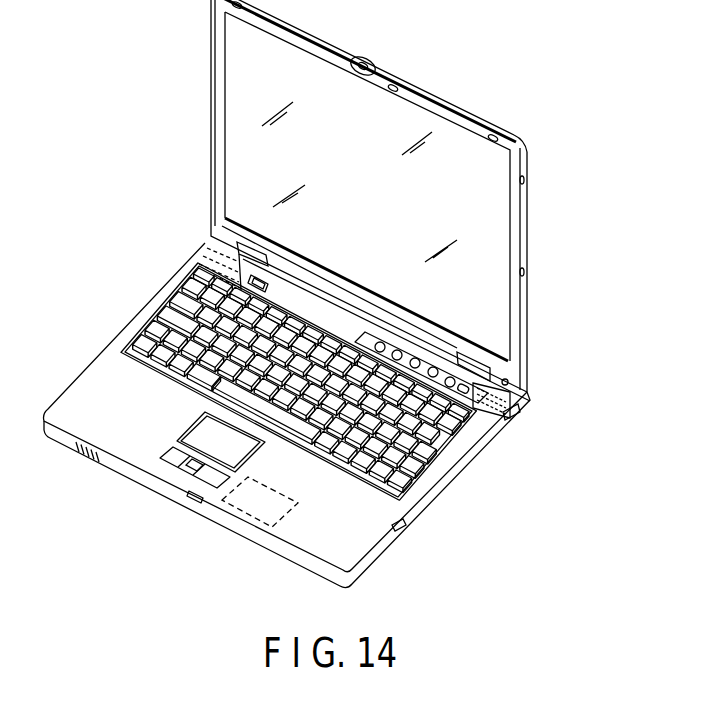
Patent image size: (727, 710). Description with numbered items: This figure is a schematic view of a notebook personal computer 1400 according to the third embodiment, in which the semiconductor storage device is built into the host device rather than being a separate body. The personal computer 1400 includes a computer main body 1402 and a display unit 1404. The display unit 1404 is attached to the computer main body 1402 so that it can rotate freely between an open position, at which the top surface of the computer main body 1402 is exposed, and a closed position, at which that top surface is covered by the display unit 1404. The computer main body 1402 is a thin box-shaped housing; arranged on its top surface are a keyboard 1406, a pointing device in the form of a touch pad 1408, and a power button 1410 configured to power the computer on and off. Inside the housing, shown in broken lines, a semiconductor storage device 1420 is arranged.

The personal computer 1400 is at (538, 482).
The computer main body 1402 is at (372, 562).
The display unit 1404 is at (525, 285).
The keyboard 1406 is at (420, 465).
The pointing device (touch pad) 1408 is at (192, 440).
The power button 1410 is at (212, 262).
The semiconductor storage device 1420 is at (237, 507).